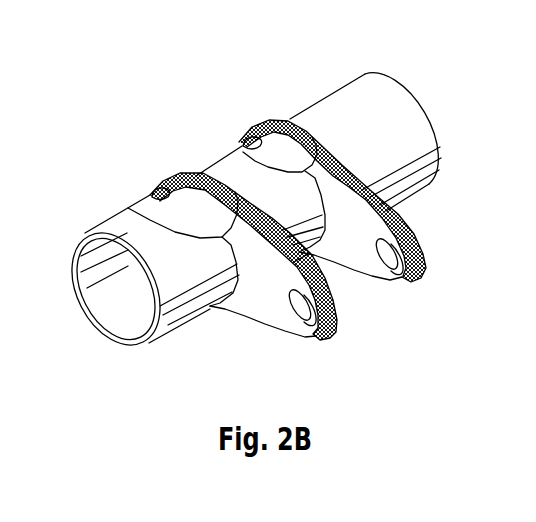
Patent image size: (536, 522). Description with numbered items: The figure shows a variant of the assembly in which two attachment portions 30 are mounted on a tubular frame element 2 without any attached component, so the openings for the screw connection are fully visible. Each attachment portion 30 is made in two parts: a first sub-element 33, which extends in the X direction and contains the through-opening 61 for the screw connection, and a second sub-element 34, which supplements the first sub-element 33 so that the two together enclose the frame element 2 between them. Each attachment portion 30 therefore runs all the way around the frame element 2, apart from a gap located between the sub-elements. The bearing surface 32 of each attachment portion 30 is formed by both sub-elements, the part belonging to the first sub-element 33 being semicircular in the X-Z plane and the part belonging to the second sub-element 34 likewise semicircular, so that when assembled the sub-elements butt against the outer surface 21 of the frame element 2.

The frame element 2 is at (287, 200).
The outer surface 21 is at (353, 95).
The attachment portion 30 is at (335, 245).
The first sub-element 33 is at (353, 233).
The bearing surface 32 is at (128, 208).
The second sub-element 34 is at (158, 190).
The through-opening 61 is at (300, 307).